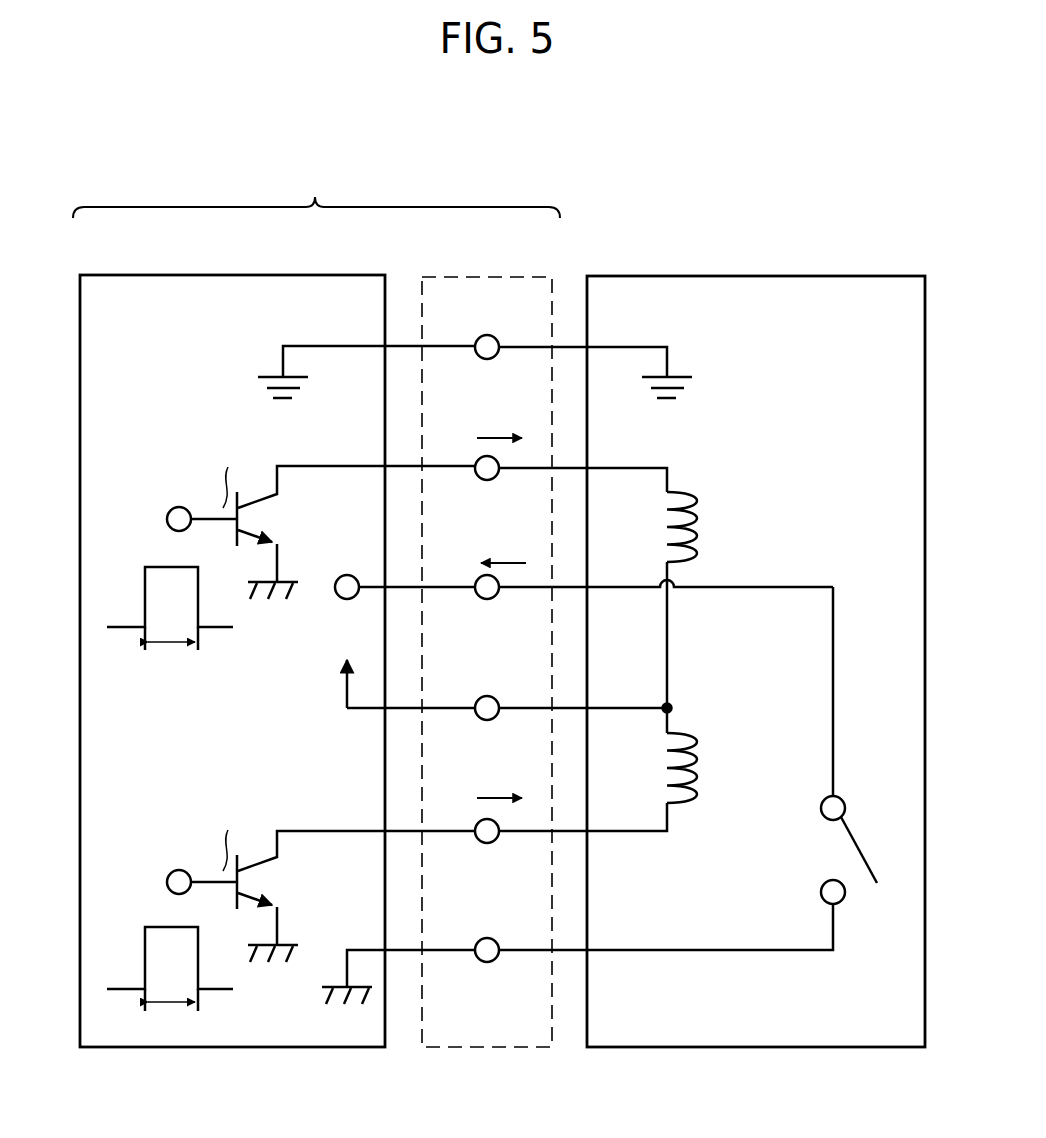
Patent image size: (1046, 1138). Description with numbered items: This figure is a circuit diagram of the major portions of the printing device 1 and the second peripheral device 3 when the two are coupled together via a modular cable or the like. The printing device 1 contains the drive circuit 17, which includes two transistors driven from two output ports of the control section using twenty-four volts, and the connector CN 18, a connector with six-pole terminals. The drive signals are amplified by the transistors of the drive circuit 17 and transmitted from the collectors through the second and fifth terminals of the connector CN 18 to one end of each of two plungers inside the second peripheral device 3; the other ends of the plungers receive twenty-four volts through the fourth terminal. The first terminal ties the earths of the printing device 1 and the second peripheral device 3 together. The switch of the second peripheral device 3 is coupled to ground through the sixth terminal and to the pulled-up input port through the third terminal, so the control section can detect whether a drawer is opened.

The printing device 1 is at (324, 181).
The second peripheral device 3 is at (796, 259).
The drive circuit 17 is at (337, 275).
The connector CN 18 is at (503, 277).